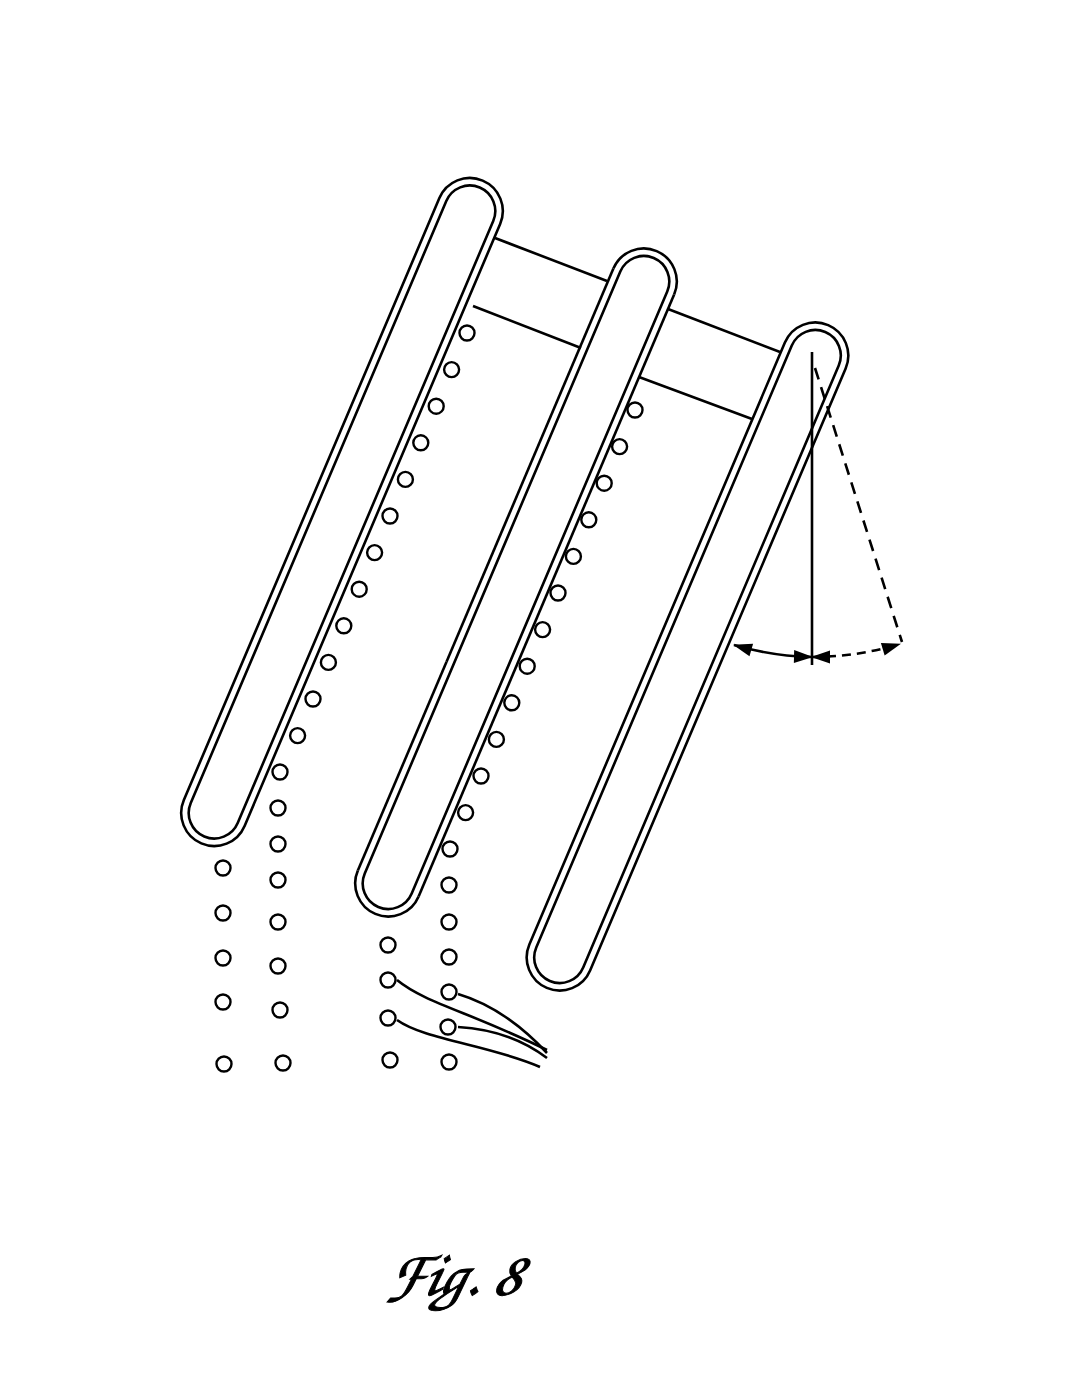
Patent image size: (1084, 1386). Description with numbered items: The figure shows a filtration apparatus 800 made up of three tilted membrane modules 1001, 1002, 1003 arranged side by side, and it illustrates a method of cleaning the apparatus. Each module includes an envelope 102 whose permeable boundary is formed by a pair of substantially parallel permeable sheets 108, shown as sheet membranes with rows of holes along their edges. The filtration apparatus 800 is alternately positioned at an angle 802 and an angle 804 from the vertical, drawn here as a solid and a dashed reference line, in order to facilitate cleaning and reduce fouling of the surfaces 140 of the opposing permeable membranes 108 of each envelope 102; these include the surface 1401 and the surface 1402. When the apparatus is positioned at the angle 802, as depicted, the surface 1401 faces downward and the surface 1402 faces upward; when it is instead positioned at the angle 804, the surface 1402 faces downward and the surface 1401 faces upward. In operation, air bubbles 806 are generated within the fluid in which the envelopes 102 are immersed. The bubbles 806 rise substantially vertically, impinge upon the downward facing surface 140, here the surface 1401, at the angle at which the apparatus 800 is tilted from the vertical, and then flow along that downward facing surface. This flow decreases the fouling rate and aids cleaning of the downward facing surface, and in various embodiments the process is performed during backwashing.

The filtration apparatus 800 is at (763, 107).
The membrane module 1001 is at (437, 168).
The membrane module 1002 is at (624, 223).
The membrane module 1003 is at (784, 300).
The envelope 102 is at (175, 817).
The permeable sheets 108 is at (270, 604).
The surfaces 140 is at (390, 788).
The surface 1401 is at (523, 656).
The surface 1402 is at (497, 534).
The angle 802 is at (768, 657).
The angle 804 is at (853, 654).
The air bubbles 806 is at (503, 1030).